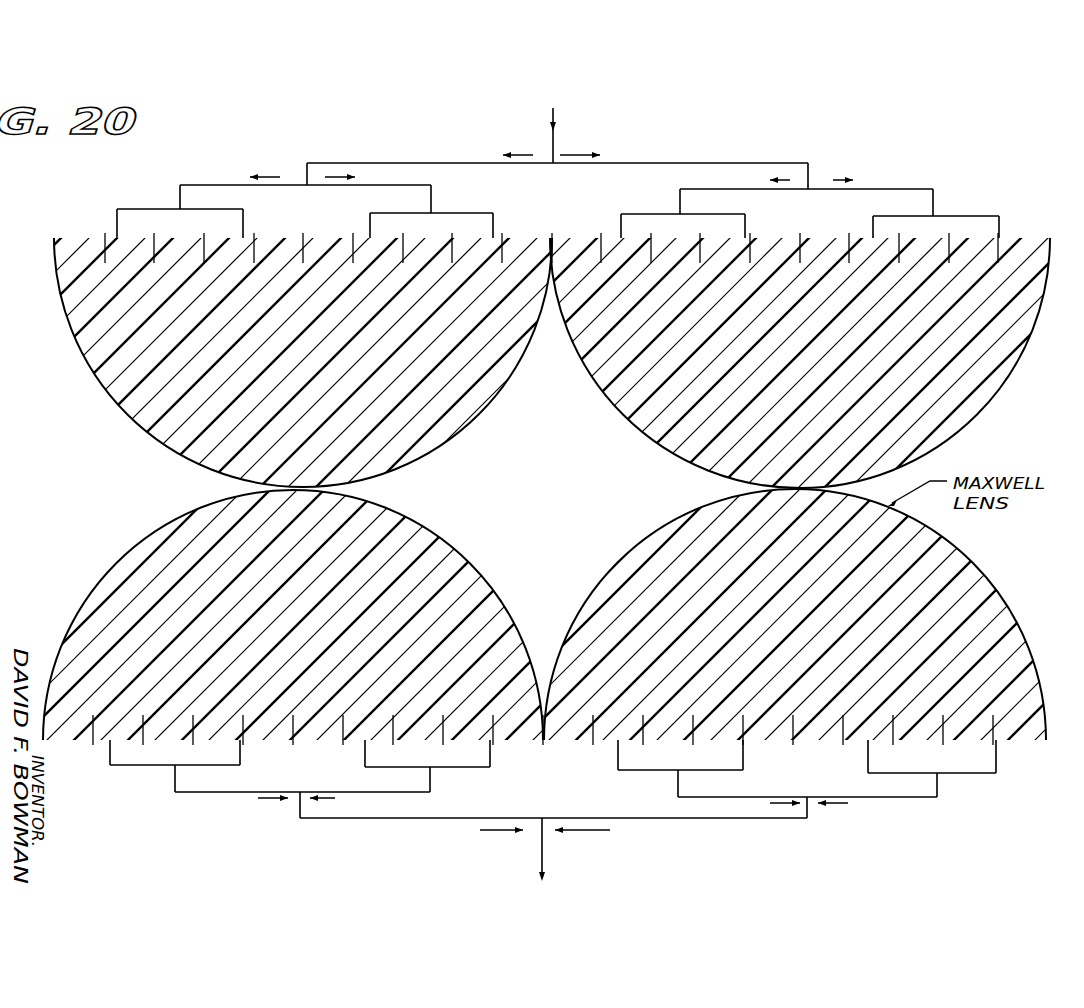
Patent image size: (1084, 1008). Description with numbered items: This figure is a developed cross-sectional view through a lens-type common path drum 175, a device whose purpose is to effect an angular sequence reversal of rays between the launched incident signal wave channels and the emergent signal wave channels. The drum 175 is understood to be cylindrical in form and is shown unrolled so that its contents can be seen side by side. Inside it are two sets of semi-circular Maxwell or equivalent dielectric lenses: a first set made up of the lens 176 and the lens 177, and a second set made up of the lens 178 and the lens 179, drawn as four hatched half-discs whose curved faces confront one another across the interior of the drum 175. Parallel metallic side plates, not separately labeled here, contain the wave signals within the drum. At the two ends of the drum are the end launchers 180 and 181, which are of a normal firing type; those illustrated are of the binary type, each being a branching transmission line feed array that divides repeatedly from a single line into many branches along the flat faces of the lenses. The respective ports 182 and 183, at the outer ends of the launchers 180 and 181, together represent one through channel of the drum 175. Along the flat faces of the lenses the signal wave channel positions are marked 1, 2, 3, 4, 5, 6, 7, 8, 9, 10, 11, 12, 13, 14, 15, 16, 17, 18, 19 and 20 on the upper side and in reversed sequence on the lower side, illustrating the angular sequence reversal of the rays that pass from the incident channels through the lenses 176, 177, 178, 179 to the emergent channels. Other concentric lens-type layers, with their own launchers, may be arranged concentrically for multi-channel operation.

The common path drum 175 is at (572, 482).
The semi-circular Maxwell lens 176 is at (443, 446).
The semi-circular Maxwell lens 177 is at (455, 538).
The semi-circular Maxwell lens 178 is at (665, 460).
The semi-circular Maxwell lens 179 is at (648, 539).
The end launcher 180 is at (568, 229).
The end launcher 181 is at (560, 800).
The port 182 is at (553, 140).
The port 183 is at (542, 843).
The channel 1 is at (308, 489).
The channel 2 is at (308, 489).
The channel 3 is at (308, 489).
The channel 4 is at (308, 489).
The channel 5 is at (307, 489).
The channel 6 is at (307, 489).
The channel 7 is at (307, 489).
The channel 8 is at (307, 489).
The channel 9 is at (307, 489).
The channel 10 is at (307, 489).
The channel 11 is at (799, 484).
The channel 12 is at (806, 489).
The channel 13 is at (806, 489).
The channel 14 is at (806, 489).
The channel 15 is at (806, 489).
The channel 16 is at (805, 489).
The channel 17 is at (805, 489).
The channel 18 is at (805, 489).
The channel 19 is at (805, 489).
The channel 20 is at (800, 492).